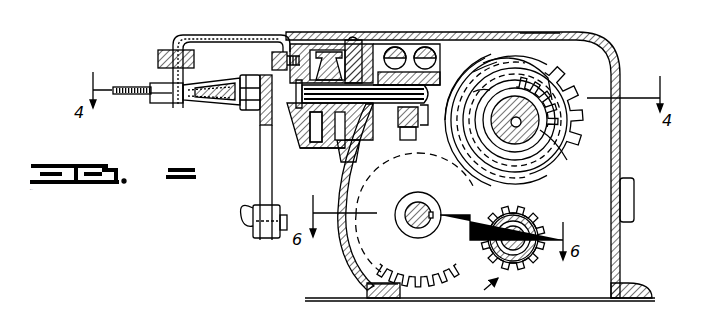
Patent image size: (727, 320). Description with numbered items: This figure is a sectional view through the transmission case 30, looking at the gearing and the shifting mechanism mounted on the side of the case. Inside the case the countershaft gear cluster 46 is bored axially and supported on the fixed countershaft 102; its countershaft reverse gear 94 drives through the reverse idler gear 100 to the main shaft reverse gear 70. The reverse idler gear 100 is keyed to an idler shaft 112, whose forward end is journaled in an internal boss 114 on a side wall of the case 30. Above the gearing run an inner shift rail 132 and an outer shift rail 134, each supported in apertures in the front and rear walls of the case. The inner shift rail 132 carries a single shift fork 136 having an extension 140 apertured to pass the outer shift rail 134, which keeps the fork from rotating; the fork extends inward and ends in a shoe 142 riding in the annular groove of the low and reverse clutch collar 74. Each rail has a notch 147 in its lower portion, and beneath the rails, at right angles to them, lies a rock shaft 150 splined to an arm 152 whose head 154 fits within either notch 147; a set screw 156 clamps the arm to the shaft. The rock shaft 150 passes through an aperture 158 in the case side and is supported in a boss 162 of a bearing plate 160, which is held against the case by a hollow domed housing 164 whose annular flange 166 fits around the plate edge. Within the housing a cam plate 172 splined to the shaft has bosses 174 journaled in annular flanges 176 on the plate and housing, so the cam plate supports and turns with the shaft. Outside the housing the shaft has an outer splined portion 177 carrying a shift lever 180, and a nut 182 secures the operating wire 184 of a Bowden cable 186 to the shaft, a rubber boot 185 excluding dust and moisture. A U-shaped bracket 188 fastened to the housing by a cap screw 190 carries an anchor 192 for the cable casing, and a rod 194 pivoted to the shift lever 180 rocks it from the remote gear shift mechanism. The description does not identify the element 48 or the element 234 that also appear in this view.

The transmission case 30 is at (580, 29).
The countershaft gear cluster 46 is at (481, 288).
The shaft 48 is at (567, 160).
The main shaft reverse gear 70 is at (560, 86).
The low and reverse clutch collar 74 is at (550, 64).
The countershaft reverse gear 94 is at (528, 216).
The reverse idler gear 100 is at (470, 290).
The fixed countershaft 102 is at (524, 262).
The idler shaft 112 is at (412, 212).
The internal boss 114 is at (368, 286).
The inner shift rail 132 is at (432, 47).
The outer shift rail 134 is at (402, 46).
The shift fork 136 is at (534, 33).
The extension 140 is at (396, 39).
The shoe 142 is at (508, 60).
The notch 147 is at (473, 72).
The rock shaft 150 is at (473, 92).
The arm 152 is at (426, 124).
The head 154 is at (485, 58).
The set screw 156 is at (412, 157).
The aperture 158 is at (400, 135).
The bearing plate 160 is at (340, 152).
The boss 162 is at (398, 117).
The domed housing 164 is at (324, 44).
The annular flange 166 is at (352, 45).
The cam plate 172 is at (305, 150).
The bosses 174 is at (305, 118).
The annular flanges 176 is at (310, 135).
The outer splined portion 177 is at (258, 112).
The shift lever 180 is at (259, 178).
The nut 182 is at (251, 106).
The operating wire 184 is at (190, 102).
The rubber sleeve or boot 185 is at (210, 106).
The Bowden cable 186 is at (138, 85).
The U-shaped bracket 188 is at (198, 32).
The cap screw 190 is at (274, 58).
The anchor 192 is at (185, 60).
The rod 194 is at (242, 214).
The hub 234 is at (515, 129).